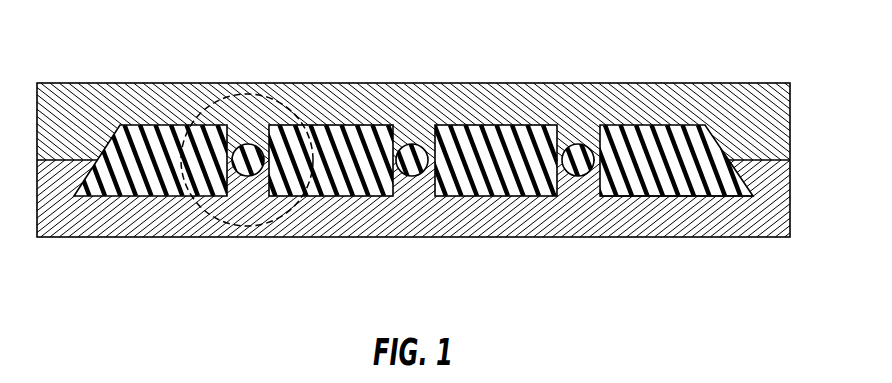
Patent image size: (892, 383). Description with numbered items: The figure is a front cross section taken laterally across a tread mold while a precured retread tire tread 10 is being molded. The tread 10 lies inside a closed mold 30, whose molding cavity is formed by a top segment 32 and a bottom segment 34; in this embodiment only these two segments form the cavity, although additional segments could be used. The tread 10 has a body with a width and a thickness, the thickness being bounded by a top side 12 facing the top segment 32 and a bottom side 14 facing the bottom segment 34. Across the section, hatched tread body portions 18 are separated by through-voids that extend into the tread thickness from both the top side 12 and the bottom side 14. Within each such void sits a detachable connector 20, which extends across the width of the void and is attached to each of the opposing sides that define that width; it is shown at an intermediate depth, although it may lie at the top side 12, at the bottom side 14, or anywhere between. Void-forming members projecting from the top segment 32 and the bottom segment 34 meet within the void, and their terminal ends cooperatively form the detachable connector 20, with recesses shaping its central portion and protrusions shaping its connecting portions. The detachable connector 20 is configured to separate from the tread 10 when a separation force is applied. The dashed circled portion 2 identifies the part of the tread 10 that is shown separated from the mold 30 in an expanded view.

The enlarged region shown in FIG. 2 is at (235, 230).
The tread 10 is at (692, 130).
The top side 12 is at (630, 128).
The bottom side 14 is at (658, 196).
The conductive elements 18 is at (342, 130).
The detachable connector 20 is at (412, 148).
The mold 30 is at (772, 83).
The top segment 32 is at (772, 123).
The bottom segment 34 is at (772, 202).